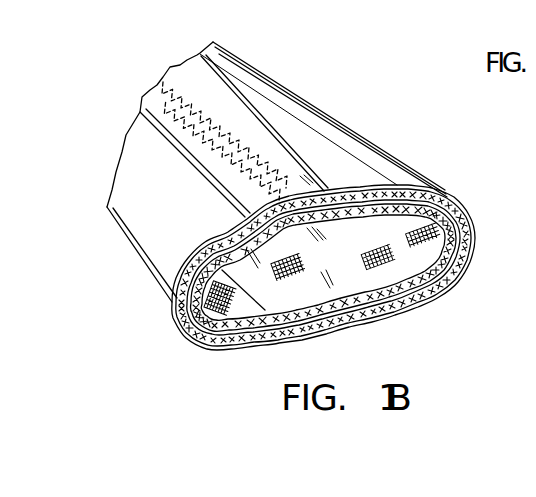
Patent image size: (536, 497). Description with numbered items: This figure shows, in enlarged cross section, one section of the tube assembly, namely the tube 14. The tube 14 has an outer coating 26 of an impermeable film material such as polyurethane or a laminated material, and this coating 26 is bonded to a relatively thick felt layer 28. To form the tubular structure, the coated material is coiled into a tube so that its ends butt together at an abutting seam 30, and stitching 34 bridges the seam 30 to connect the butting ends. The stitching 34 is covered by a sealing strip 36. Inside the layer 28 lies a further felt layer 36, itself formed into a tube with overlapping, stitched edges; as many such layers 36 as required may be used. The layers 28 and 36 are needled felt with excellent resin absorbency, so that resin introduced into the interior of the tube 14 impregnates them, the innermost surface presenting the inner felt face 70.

The tube 14 is at (143, 150).
The outer coating 26 is at (311, 120).
The felt layer 28 is at (473, 238).
The abutting seam 30 is at (327, 190).
The stitching 34 is at (234, 173).
The sealing strip / further felt layer 36 is at (185, 83).
The inner felt face 70 is at (356, 275).